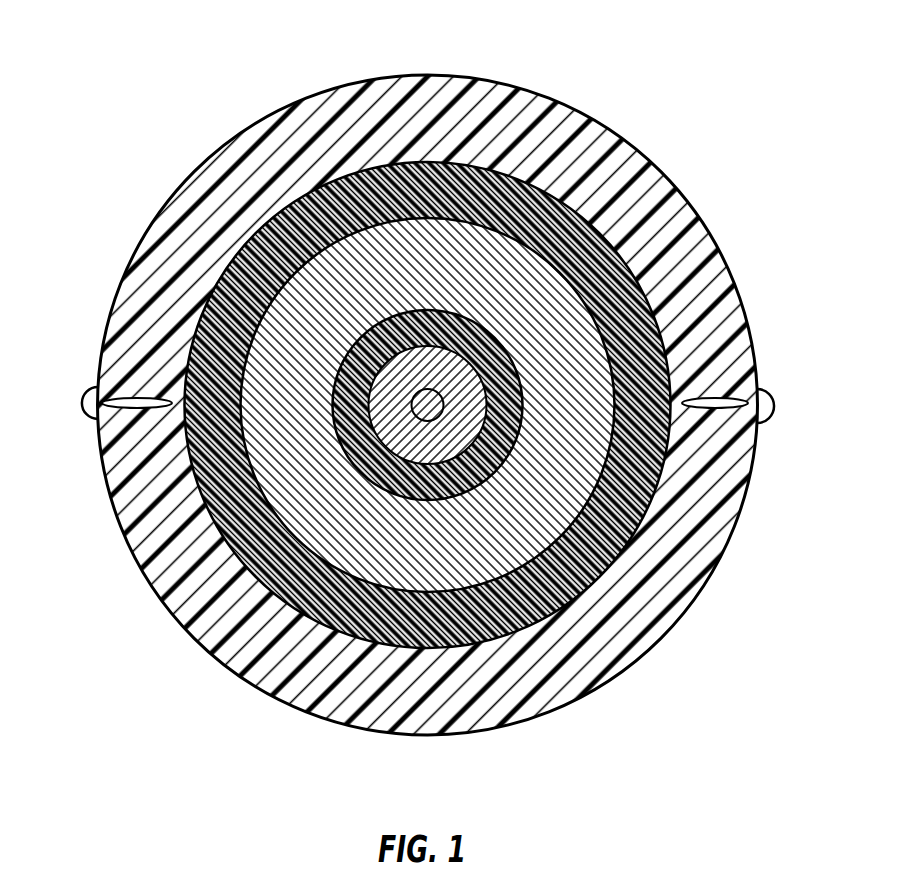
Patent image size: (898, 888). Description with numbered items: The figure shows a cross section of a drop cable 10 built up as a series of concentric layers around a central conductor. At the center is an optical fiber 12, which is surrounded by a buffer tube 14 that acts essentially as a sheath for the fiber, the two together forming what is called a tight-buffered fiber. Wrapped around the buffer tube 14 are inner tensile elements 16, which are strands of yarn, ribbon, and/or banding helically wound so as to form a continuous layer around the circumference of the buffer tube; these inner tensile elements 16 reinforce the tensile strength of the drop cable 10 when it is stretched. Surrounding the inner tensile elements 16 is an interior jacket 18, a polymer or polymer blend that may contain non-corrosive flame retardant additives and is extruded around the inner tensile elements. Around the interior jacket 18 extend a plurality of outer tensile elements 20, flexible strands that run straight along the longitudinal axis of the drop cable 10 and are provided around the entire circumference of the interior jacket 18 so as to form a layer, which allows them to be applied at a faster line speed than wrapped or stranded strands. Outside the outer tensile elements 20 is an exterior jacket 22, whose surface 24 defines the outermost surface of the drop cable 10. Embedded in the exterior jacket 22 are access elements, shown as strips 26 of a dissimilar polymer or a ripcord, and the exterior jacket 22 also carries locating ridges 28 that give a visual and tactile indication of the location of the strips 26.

The drop cable 10 is at (765, 133).
The optical fiber 12 is at (427, 400).
The buffer tube 14 is at (480, 412).
The inner tensile elements 16 is at (363, 447).
The interior jacket 18 is at (298, 455).
The outer tensile elements 20 is at (420, 180).
The exterior jacket 22 is at (153, 272).
The surface 24 is at (302, 708).
The strips 26 is at (142, 402).
The locating ridges 28 is at (83, 402).